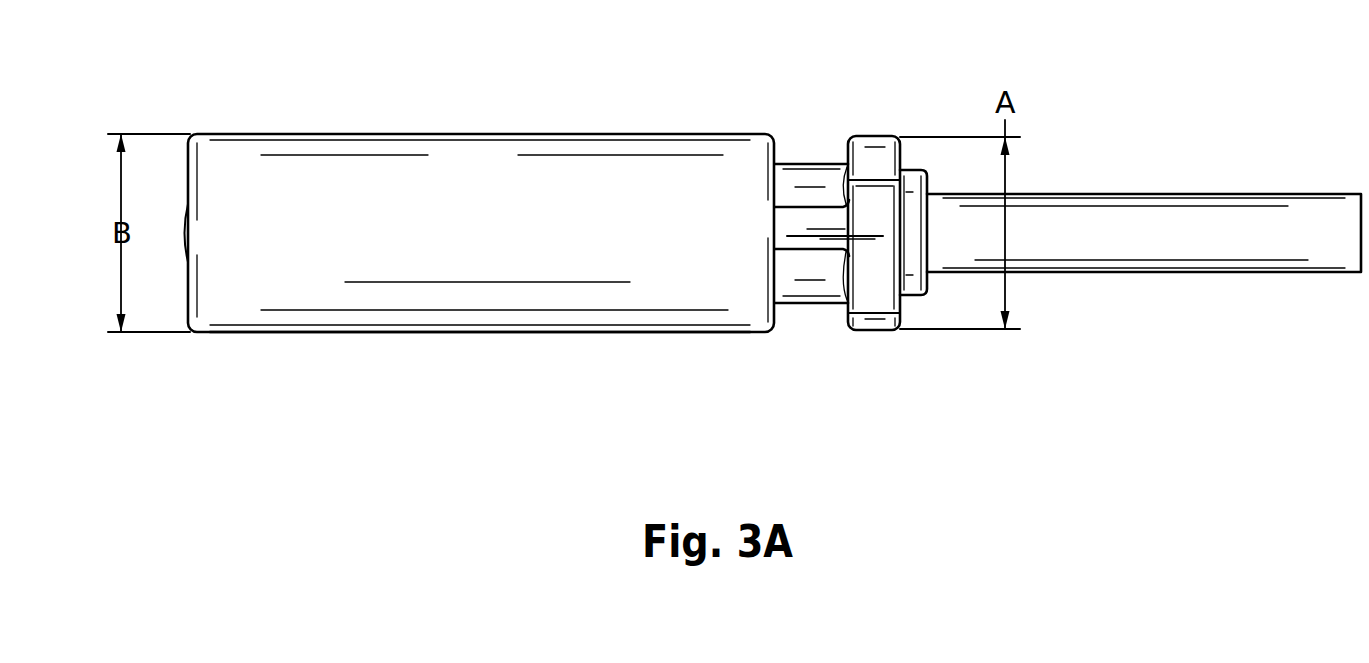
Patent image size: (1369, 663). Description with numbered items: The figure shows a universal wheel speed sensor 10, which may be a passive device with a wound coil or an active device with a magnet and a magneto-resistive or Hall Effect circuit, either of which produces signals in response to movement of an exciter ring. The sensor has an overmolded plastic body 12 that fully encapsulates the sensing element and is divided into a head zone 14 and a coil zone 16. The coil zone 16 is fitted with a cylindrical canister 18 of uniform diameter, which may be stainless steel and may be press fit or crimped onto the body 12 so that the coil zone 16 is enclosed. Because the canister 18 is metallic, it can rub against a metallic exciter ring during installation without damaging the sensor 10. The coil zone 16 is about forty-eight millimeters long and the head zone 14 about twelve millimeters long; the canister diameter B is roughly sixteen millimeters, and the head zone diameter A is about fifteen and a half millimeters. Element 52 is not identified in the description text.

The universal wheel speed sensor 10 is at (645, 76).
The body 12 is at (808, 303).
The head zone 14 is at (853, 279).
The coil zone 16 is at (778, 362).
The cylindrical canister 18 is at (653, 333).
The flange 52 is at (851, 138).